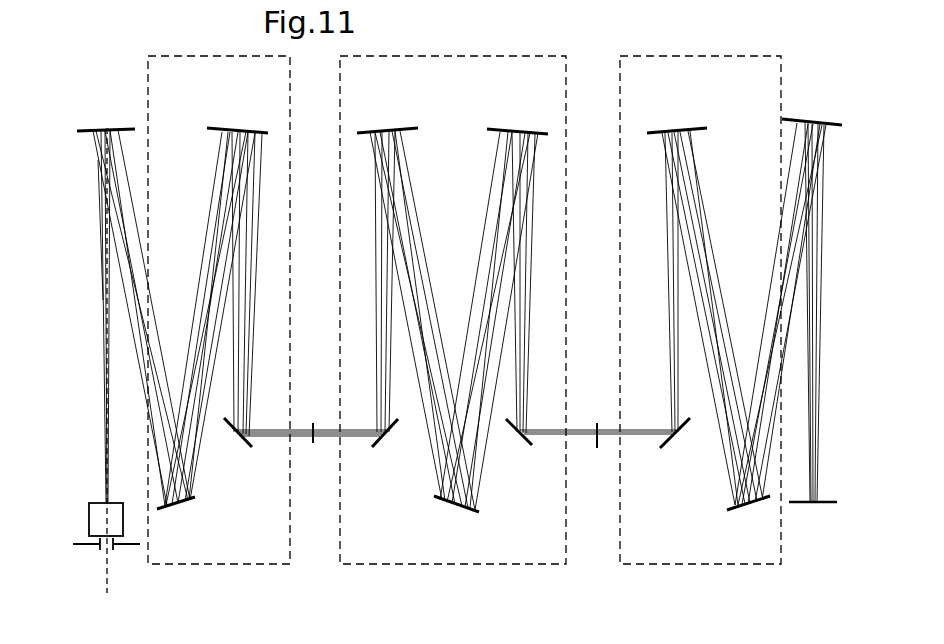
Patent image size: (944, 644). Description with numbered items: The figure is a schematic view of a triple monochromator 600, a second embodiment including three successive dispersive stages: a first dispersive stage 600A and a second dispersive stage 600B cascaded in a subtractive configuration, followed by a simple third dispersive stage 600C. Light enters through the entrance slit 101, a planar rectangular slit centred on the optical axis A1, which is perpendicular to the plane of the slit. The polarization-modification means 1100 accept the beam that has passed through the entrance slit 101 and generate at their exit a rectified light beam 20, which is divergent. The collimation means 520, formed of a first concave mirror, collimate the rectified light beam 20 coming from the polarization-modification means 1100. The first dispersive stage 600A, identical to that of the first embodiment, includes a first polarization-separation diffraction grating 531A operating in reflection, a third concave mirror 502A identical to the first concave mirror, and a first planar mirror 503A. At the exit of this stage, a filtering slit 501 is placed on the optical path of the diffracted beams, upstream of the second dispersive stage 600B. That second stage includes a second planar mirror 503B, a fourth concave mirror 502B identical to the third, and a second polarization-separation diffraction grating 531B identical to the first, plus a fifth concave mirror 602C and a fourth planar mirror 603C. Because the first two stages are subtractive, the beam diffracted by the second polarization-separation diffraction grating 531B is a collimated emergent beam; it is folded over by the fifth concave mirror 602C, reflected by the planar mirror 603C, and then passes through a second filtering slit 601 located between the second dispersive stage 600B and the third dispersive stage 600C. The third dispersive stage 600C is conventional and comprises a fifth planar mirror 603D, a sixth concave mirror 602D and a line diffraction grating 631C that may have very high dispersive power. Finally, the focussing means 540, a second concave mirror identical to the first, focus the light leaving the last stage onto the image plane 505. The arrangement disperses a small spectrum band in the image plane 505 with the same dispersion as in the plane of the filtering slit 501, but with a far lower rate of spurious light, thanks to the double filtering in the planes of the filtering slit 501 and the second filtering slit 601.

The rectified light beam 20 is at (100, 200).
The entrance slit 101 is at (90, 548).
The optical axis A1 is at (108, 570).
The polarization-modification means 1100 is at (95, 493).
The collimation means 520 is at (88, 128).
The third concave mirror 502A is at (220, 128).
The fourth concave mirror 502B is at (364, 130).
The fifth concave mirror 602C is at (540, 128).
The sixth concave mirror 602D is at (698, 128).
The focussing means 540 is at (796, 118).
The first polarization-separation diffraction grating 531A is at (182, 510).
The second polarization-separation diffraction grating 531B is at (455, 514).
The line diffraction grating 631C is at (740, 512).
The first planar mirror 503A is at (238, 448).
The second planar mirror 503B is at (385, 448).
The fourth planar mirror 603C is at (518, 447).
The fifth planar mirror 603D is at (672, 450).
The filtering slit 501 is at (313, 445).
The second filtering slit 601 is at (597, 449).
The image plane 505 is at (825, 505).
The first dispersive stage 600A is at (268, 566).
The second dispersive stage 600B is at (383, 566).
The third dispersive stage 600C is at (664, 566).
The monochromator 600 is at (720, 604).